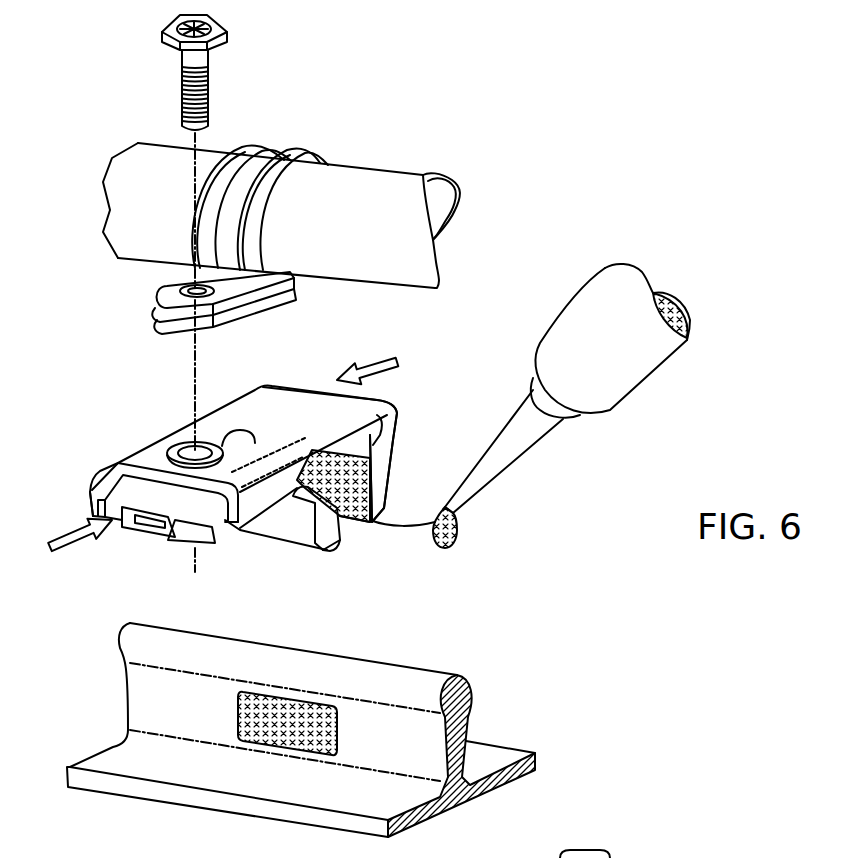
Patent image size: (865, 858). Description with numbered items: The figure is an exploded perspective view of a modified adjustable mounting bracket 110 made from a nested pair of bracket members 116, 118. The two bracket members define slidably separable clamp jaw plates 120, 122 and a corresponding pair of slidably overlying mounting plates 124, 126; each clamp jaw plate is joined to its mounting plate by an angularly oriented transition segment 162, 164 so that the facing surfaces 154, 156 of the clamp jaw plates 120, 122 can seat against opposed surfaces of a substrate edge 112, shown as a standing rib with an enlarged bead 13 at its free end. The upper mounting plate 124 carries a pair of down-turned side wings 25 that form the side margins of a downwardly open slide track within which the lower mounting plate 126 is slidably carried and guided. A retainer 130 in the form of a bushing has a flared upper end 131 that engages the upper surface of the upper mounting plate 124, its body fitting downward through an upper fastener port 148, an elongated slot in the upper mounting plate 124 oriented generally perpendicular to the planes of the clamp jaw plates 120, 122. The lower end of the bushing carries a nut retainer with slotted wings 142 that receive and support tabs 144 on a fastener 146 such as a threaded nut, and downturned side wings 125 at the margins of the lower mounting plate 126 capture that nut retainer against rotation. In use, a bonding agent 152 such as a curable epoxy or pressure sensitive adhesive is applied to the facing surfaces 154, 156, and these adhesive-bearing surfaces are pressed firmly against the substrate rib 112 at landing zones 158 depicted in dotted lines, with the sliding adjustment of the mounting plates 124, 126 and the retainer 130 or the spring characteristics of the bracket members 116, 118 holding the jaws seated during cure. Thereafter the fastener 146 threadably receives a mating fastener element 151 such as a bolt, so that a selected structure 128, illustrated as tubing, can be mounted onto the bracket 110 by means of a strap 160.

The mating fastener element 151 is at (208, 92).
The strap 160 is at (257, 160).
The selected structure 128 is at (387, 177).
The upper mounting plate 124 is at (257, 390).
The adjustable mounting bracket 110 is at (237, 459).
The bracket member 116 is at (316, 391).
The upper fastener port 148 is at (222, 435).
The flared upper end 131 is at (182, 445).
The retainer 130 is at (158, 432).
The lower mounting plate 126 is at (115, 487).
The downturned side wings 125 is at (92, 503).
The slotted wings 142 is at (123, 520).
The tabs 144 is at (147, 525).
The fastener 146 is at (187, 542).
The down-turned side wings 25 is at (247, 512).
The bracket member 118 is at (280, 538).
The transition segment 164 is at (315, 497).
The clamp jaw plate 122 is at (315, 548).
The facing surface 156 is at (340, 540).
The facing surface 154 is at (358, 520).
The clamp jaw plate 120 is at (382, 483).
The transition segment 162 is at (390, 433).
The bonding agent 152 is at (453, 537).
The enlarged bead 13 is at (321, 739).
The substrate edge 112 is at (465, 735).
The landing zones 158 is at (295, 737).